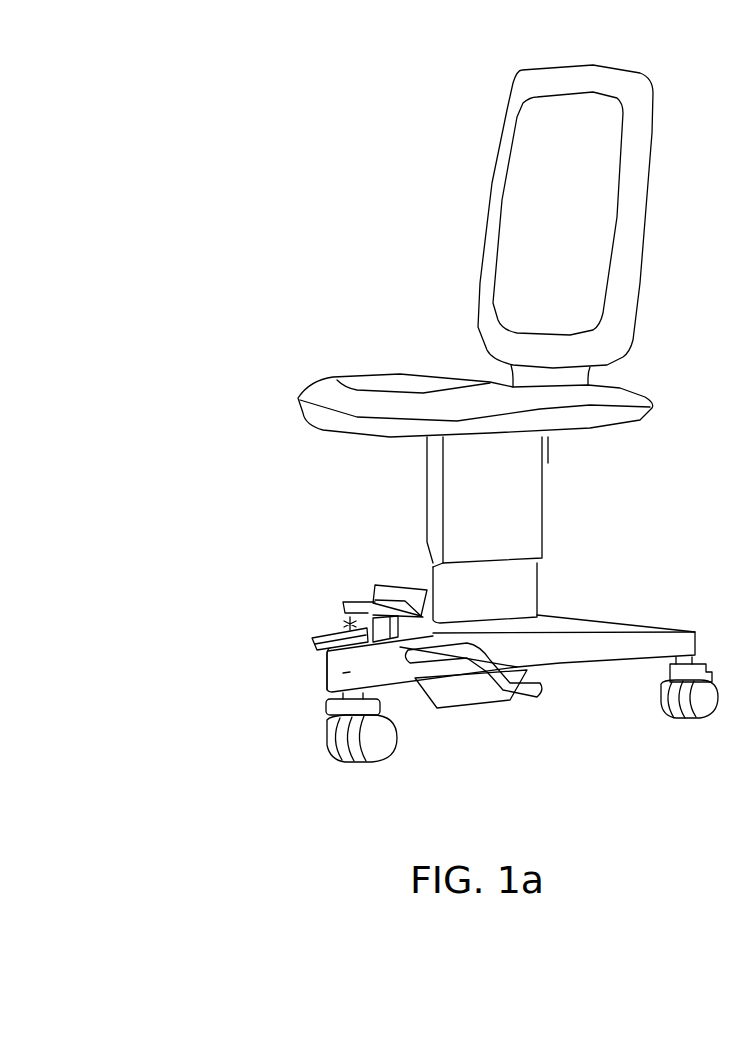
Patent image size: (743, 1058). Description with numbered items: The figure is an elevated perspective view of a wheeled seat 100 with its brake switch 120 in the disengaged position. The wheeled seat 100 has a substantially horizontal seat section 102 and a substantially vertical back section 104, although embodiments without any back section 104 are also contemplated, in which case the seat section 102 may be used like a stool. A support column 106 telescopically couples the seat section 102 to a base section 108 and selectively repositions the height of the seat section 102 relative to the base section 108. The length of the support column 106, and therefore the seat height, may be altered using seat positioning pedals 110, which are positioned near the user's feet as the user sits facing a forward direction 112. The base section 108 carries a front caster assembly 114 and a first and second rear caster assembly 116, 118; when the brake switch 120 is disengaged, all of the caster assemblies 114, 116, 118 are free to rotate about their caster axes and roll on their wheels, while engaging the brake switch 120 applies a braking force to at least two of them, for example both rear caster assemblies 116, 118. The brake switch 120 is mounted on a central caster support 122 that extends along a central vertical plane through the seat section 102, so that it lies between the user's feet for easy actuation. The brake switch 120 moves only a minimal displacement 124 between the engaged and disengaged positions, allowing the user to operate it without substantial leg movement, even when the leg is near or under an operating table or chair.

The wheeled seat 100 is at (340, 125).
The seat section 102 is at (370, 374).
The back section 104 is at (642, 238).
The support column 106 is at (556, 514).
The base section 108 is at (631, 609).
The seat positioning pedals 110 is at (320, 643).
The forward direction 112 is at (267, 412).
The front caster assembly 114 is at (316, 751).
The first rear caster assembly 116 is at (403, 570).
The second rear caster assembly 118 is at (690, 735).
The brake switch 120 is at (350, 605).
The central caster support 122 is at (343, 675).
The minimal displacement 124 is at (347, 632).